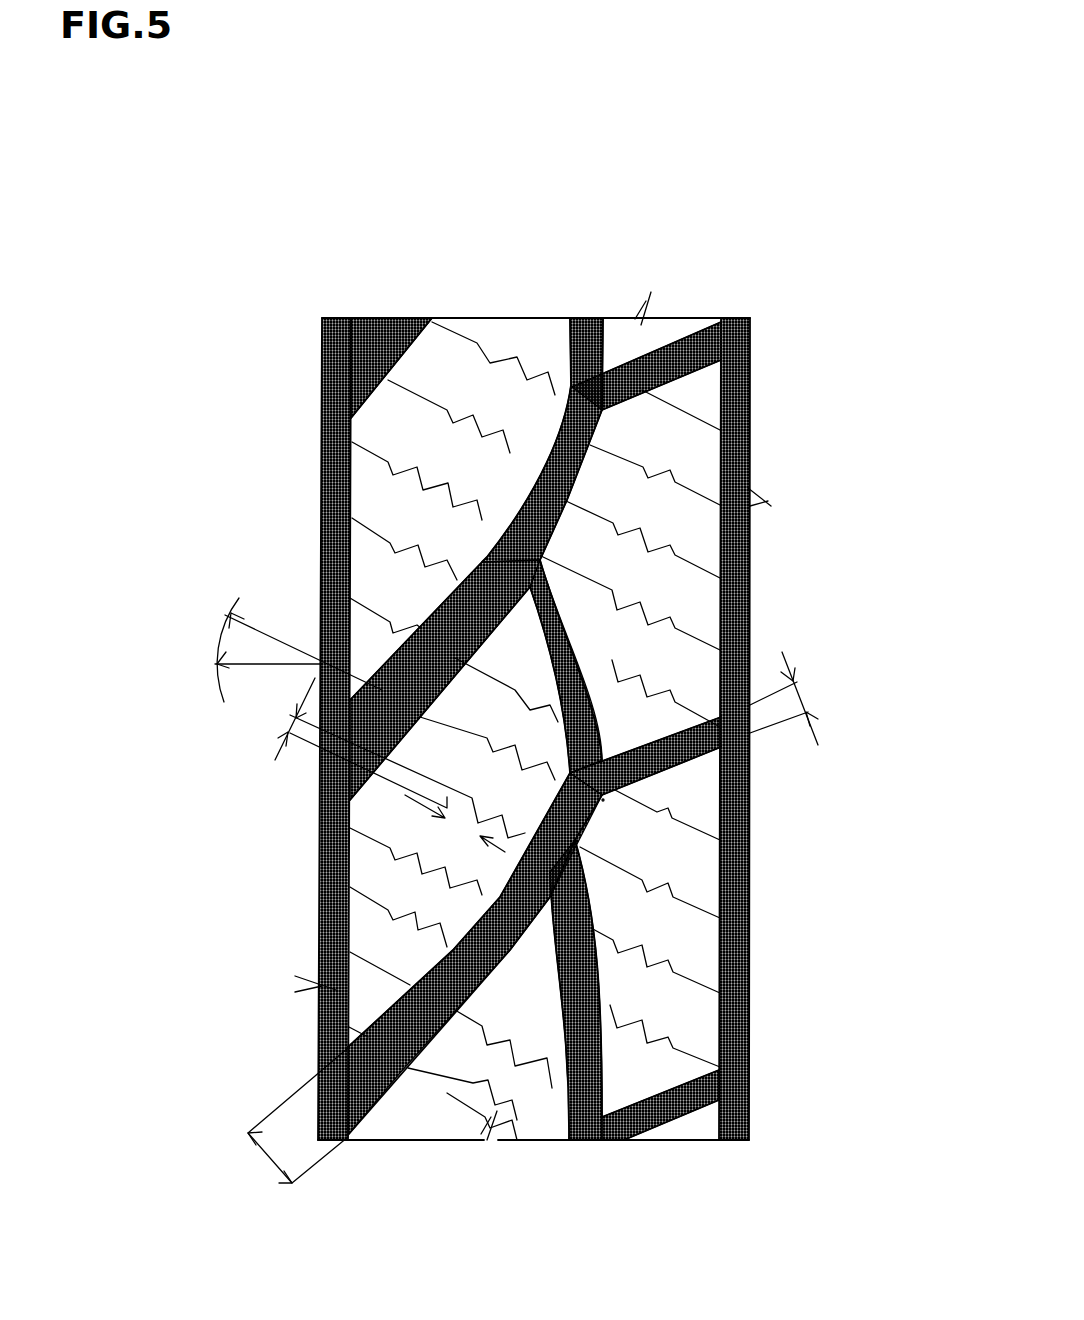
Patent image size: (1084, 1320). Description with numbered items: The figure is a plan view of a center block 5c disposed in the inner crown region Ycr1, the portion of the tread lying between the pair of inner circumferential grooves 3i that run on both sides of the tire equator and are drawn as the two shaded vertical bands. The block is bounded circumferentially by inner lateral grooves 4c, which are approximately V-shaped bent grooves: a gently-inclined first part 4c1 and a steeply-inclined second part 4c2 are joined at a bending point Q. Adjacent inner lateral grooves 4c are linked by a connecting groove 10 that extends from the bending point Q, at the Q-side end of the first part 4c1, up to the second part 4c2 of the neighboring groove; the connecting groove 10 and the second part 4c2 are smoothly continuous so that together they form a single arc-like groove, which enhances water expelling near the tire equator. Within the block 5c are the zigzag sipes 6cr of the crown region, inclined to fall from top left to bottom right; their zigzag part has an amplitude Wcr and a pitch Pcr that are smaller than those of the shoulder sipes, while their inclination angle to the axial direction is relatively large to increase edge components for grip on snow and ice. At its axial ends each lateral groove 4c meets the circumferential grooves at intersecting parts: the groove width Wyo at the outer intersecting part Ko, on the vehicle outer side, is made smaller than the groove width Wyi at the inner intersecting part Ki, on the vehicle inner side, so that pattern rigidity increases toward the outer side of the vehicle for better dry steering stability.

The inner circumferential groove 3i is at (335, 1097).
The second part of the inner lateral groove 4c2 is at (520, 512).
The first part of the inner lateral groove 4c1 is at (665, 760).
The inner lateral groove 4c is at (875, 775).
The center block 5c is at (665, 433).
The sipe disposed in the crown region 6cr is at (482, 885).
The connecting groove 10 is at (565, 632).
The bending point Q is at (605, 802).
The inner crown region Ycr1 is at (722, 271).
The amplitude of crown sipe zigzag part Wcr is at (273, 719).
The pitch of crown sipe zigzag part Pcr is at (470, 832).
The inner intersecting part Ki is at (306, 1055).
The outer intersecting part Ko is at (758, 660).
The groove width at inner intersecting part Wyi is at (280, 1116).
The groove width at outer intersecting part Wyo is at (809, 698).